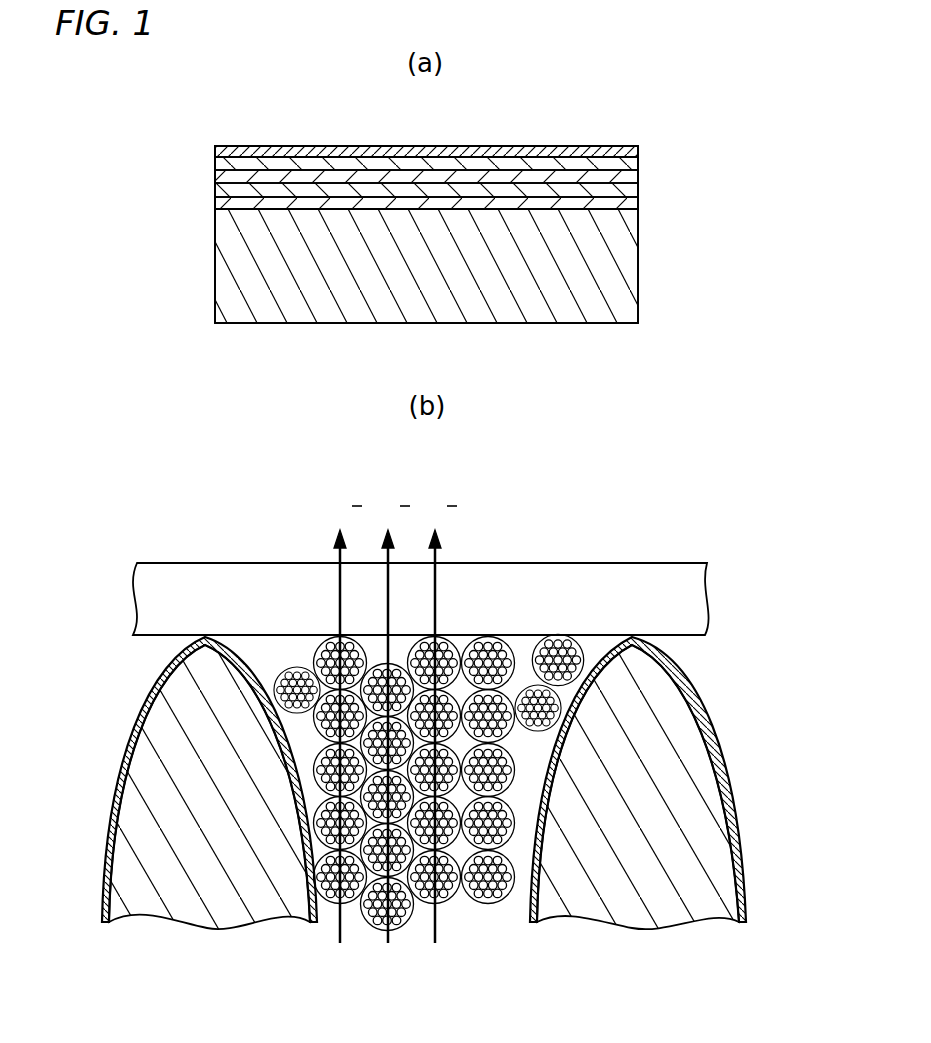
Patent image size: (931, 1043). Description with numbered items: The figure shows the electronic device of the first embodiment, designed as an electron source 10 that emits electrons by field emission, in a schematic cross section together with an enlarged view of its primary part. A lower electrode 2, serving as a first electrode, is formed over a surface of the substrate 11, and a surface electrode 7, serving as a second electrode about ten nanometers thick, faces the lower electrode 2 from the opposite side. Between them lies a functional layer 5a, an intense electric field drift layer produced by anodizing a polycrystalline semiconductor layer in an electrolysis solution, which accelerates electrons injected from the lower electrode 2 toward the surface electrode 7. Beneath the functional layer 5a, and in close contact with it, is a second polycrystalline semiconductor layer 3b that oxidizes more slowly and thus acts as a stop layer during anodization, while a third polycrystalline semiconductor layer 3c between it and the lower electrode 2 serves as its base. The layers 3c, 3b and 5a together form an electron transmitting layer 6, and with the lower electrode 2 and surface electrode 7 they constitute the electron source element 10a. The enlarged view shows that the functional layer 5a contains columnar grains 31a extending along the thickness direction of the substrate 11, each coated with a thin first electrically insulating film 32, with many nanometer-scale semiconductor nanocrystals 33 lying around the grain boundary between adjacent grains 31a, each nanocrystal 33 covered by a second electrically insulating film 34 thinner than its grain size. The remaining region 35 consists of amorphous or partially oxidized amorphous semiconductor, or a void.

The surface electrode 7 is at (618, 152).
The functional layer 5a is at (627, 167).
The second polycrystalline semiconductor layer 3b is at (622, 178).
The third polycrystalline semiconductor layer 3c is at (622, 190).
The electron transmitting layer 6 is at (705, 109).
The electron source element 10a is at (745, 63).
The lower electrode 2 is at (638, 208).
The substrate 11 is at (598, 263).
The electron source 10 is at (213, 300).
The second electrically insulating film 34 is at (300, 737).
The semiconductor nanocrystal 33 is at (300, 666).
The region 35 is at (280, 720).
The first electrically insulating film 32 is at (138, 700).
The grain 31a is at (207, 773).